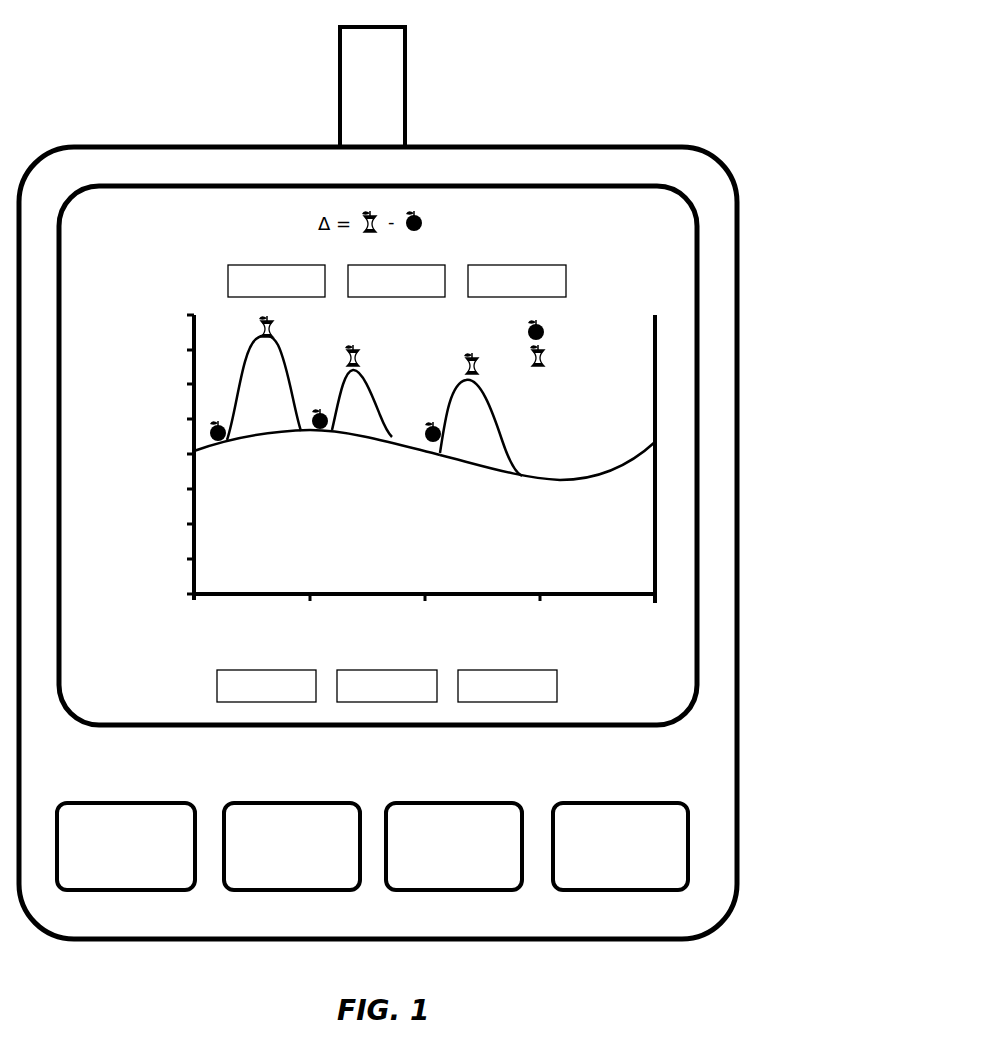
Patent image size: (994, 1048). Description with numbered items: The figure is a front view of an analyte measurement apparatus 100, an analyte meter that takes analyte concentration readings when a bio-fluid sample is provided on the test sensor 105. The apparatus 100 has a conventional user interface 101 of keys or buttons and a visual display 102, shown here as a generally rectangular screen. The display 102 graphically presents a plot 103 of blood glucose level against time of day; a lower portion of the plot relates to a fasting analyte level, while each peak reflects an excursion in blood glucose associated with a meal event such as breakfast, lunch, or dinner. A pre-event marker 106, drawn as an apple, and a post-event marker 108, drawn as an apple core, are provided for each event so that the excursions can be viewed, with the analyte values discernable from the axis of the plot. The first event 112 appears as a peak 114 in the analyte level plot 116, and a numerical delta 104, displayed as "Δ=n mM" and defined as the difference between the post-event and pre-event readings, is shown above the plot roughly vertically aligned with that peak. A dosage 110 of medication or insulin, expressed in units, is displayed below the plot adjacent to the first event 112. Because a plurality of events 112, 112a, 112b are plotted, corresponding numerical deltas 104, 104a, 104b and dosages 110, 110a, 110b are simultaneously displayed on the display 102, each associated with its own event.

The analyte measurement apparatus 100 is at (521, 118).
The user interface 101 is at (608, 902).
The visual display 102 is at (245, 185).
The plot 103 is at (563, 537).
The numerical delta 104 is at (265, 265).
The numerical delta 104a is at (444, 264).
The numerical delta 104b is at (557, 265).
The test sensor 105 is at (385, 87).
The pre-event marker 106 is at (215, 423).
The post-event marker 108 is at (262, 318).
The dosage 110 is at (272, 703).
The dosage 110a is at (390, 703).
The dosage 110b is at (517, 703).
The first event 112 is at (265, 447).
The event 112a is at (357, 447).
The event 112b is at (476, 476).
The peak 114 is at (258, 336).
The analyte level plot 116 is at (505, 421).